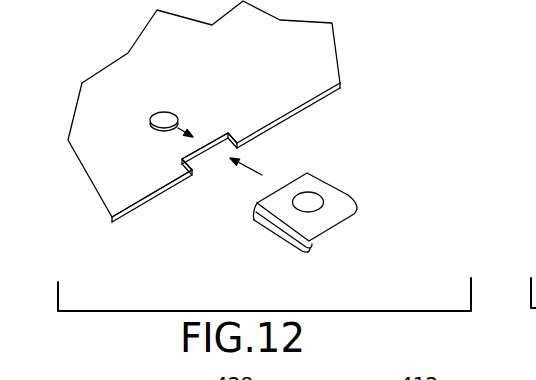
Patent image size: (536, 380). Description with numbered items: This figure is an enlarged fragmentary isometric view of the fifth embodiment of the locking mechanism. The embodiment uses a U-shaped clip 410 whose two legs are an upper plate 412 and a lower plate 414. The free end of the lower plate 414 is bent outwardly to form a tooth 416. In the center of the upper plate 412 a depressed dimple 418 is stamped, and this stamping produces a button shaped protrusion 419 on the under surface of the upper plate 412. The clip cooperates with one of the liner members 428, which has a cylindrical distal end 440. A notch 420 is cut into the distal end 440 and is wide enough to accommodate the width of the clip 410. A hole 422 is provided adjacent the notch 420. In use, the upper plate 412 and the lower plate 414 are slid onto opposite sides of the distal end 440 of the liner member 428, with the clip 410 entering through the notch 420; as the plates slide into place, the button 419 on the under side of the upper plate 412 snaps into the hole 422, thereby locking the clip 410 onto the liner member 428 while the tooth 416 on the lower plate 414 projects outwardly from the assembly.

The U-shaped clip 410 is at (349, 210).
The upper plate 412 is at (338, 203).
The lower plate 414 is at (290, 243).
The tooth 416 is at (252, 219).
The depressed dimple 418 is at (309, 195).
The button shaped protrusion 419 is at (485, 369).
The notch 420 is at (222, 136).
The hole 422 is at (155, 113).
The liner member 428 is at (361, 61).
The cylindrical distal end 440 is at (163, 193).